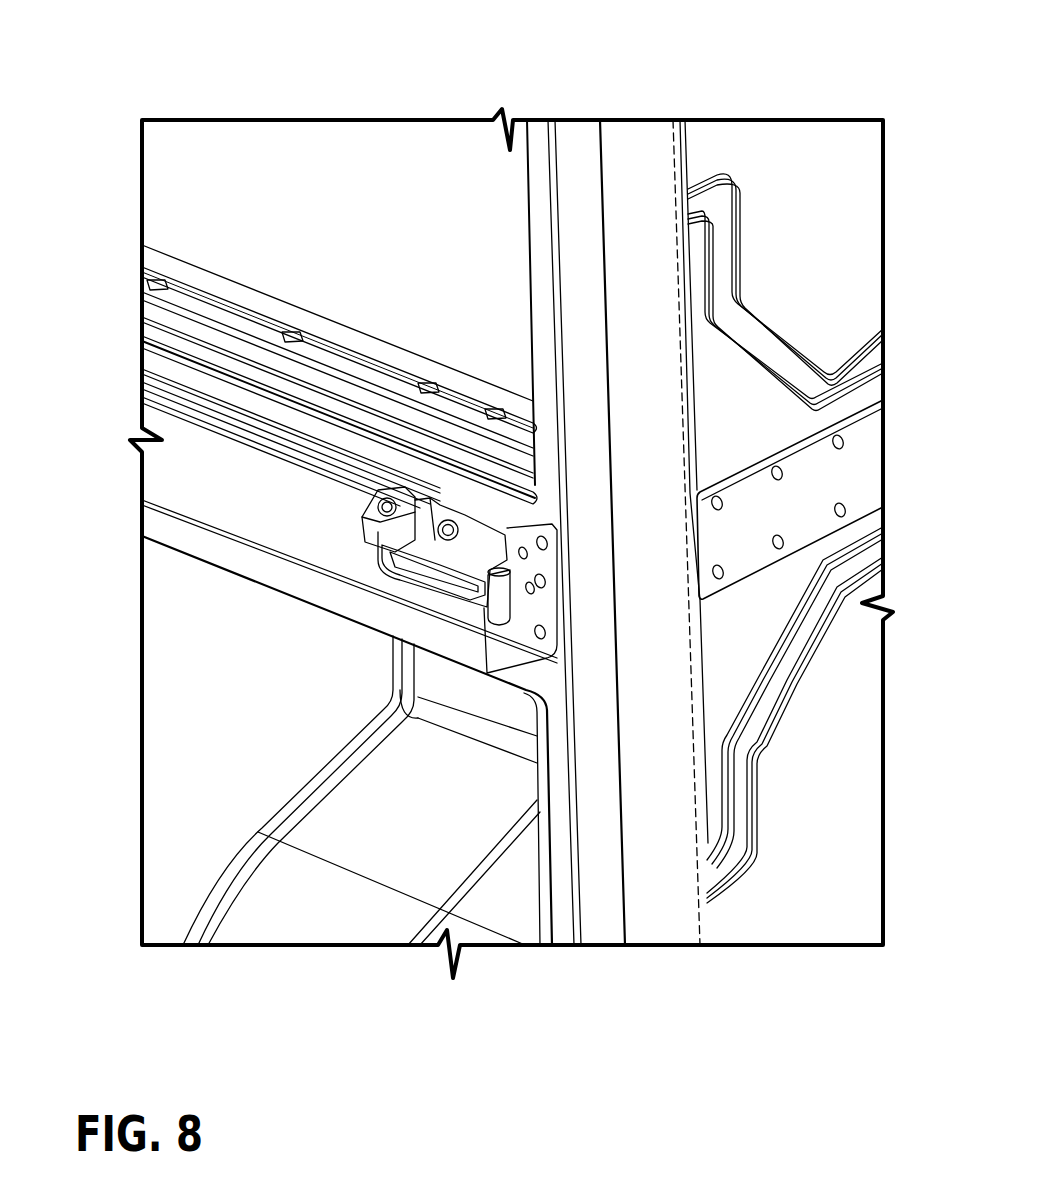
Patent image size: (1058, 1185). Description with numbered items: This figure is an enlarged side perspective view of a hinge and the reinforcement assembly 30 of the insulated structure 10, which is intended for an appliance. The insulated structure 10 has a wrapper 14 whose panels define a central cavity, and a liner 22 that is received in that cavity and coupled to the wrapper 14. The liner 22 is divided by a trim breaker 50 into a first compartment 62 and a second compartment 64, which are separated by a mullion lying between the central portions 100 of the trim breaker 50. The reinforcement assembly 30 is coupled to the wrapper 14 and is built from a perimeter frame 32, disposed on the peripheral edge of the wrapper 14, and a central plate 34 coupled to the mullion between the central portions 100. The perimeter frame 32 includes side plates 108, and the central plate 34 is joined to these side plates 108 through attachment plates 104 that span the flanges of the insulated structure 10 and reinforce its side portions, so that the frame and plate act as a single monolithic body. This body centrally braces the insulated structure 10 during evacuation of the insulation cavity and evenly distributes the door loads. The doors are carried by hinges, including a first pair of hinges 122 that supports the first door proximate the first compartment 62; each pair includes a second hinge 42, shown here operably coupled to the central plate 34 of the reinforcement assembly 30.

The insulated structure 10 is at (100, 197).
The wrapper 14 is at (803, 238).
The liner 22 is at (215, 670).
The reinforcement assembly 30 is at (625, 168).
The perimeter frame 32 is at (652, 312).
The central plate 34 is at (213, 483).
The second hinge 42 is at (430, 568).
The trim breaker 50 is at (572, 150).
The first compartment 62 is at (373, 275).
The second compartment 64 is at (220, 766).
The central portions 100 is at (175, 370).
The attachment plates 104 is at (588, 570).
The side plates 108 is at (650, 187).
The first pair of hinges 122 is at (358, 533).